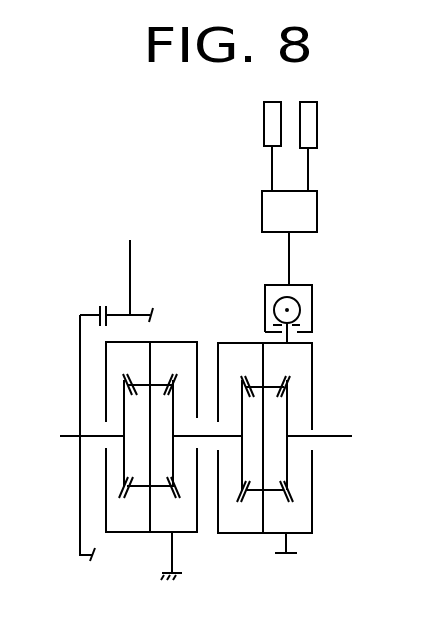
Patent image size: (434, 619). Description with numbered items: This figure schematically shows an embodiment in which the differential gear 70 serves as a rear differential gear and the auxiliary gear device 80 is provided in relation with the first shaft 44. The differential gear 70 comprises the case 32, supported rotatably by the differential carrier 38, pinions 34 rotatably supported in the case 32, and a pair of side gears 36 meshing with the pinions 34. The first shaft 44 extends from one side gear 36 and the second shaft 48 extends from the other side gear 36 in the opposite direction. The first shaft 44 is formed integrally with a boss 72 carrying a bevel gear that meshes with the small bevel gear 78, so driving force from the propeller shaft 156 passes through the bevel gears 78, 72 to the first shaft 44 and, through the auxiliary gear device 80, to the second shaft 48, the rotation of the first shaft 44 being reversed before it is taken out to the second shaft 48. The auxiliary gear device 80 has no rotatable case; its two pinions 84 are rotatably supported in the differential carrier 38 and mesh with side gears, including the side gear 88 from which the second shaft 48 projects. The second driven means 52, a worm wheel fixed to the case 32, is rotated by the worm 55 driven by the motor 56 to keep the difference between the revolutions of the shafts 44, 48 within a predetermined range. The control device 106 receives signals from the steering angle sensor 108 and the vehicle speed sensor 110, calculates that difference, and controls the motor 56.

The case 32 is at (312, 498).
The pinions 34 is at (272, 380).
The side gear 36 is at (288, 413).
The differential carrier 38 is at (192, 339).
The first shaft 44 is at (75, 433).
The second shaft 48 is at (347, 437).
The second driven means 52 is at (295, 337).
The worm 55 is at (300, 310).
The motor 56 is at (303, 283).
The differential gear 70 is at (181, 294).
The boss 72 is at (80, 350).
The small bevel gear 78 is at (117, 313).
The auxiliary gear device 80 is at (97, 507).
The pinions 84 is at (138, 380).
The side gear 88 is at (124, 442).
The control device 106 is at (310, 203).
The steering angle sensor 108 is at (266, 124).
The vehicle speed sensor 110 is at (313, 124).
The propeller shaft 156 is at (128, 263).